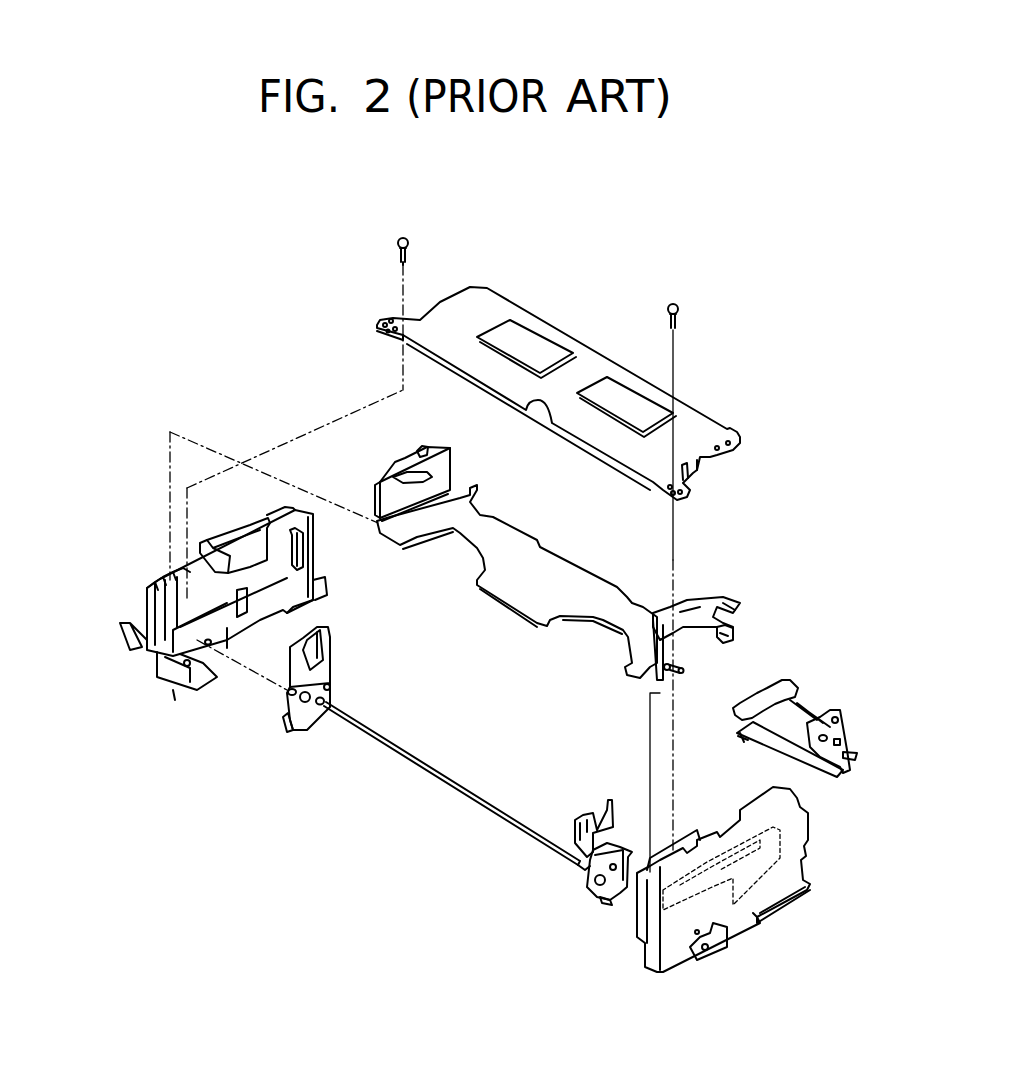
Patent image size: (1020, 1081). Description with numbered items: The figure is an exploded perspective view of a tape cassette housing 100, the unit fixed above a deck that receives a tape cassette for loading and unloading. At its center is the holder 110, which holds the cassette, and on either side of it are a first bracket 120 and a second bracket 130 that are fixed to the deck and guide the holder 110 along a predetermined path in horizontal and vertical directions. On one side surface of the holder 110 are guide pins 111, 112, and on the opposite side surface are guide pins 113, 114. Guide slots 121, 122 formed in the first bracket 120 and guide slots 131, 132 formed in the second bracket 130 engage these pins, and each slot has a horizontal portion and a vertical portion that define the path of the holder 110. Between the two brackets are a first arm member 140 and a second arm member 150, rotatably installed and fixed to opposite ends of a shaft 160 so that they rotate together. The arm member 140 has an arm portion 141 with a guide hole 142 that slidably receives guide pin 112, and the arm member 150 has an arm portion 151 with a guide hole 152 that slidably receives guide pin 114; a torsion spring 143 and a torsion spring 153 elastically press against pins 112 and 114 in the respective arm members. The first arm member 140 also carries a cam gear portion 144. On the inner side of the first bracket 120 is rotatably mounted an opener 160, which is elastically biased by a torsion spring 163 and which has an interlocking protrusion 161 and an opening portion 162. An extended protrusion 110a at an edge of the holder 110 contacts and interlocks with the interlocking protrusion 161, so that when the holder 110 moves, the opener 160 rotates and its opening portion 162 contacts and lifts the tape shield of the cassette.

The tape cassette housing 100 is at (297, 347).
The holder 110 is at (727, 587).
The extended protrusion 110a is at (733, 640).
The guide pin 111 is at (737, 618).
The guide pin 112 is at (680, 670).
The guide pin 113 is at (420, 452).
The guide pin 114 is at (372, 500).
The first bracket 120 is at (812, 858).
The guide slot 121 is at (780, 853).
The guide slot 122 is at (730, 926).
The second bracket 130 is at (147, 572).
The guide slot 131 is at (268, 553).
The guide slot 132 is at (180, 577).
The first arm member 140 is at (580, 903).
The arm portion 141 is at (620, 827).
The guide hole 142 is at (600, 810).
The torsion spring 143 is at (583, 860).
The cam gear portion 144 is at (607, 909).
The second arm member 150 is at (287, 733).
The arm portion 151 is at (333, 651).
The guide hole 152 is at (318, 630).
The torsion spring 153 is at (288, 694).
The shaft / opener 160 is at (420, 765).
The interlocking protrusion 161 is at (845, 713).
The opening portion 162 is at (740, 710).
The torsion spring 163 is at (750, 745).